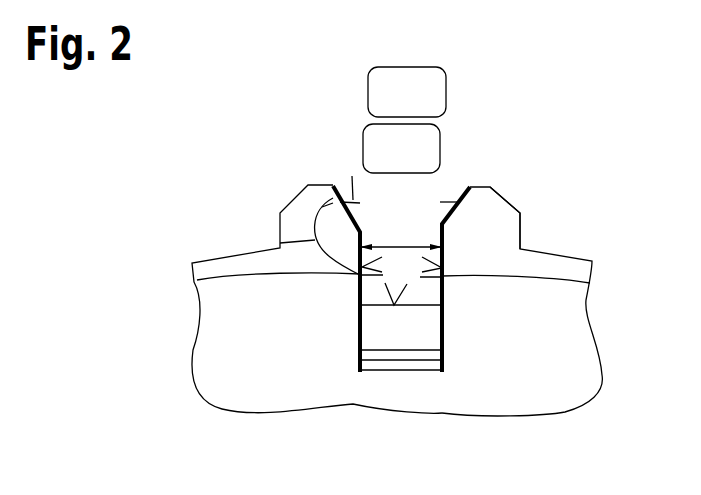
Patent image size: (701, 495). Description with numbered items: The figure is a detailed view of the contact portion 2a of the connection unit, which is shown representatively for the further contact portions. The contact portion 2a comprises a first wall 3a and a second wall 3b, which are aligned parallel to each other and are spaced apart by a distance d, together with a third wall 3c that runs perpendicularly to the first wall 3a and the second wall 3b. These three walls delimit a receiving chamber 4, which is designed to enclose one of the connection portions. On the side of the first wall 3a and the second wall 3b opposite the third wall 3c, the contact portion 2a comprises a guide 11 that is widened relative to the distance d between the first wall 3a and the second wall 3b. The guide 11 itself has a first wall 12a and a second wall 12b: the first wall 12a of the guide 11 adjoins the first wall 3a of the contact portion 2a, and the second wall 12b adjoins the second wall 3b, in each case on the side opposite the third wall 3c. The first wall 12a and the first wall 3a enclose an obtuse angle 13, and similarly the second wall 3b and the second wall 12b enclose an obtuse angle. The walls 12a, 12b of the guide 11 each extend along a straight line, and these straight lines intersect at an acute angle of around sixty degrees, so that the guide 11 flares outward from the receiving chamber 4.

The contact portion 2a is at (506, 88).
The first wall 3a is at (202, 280).
The second wall 3b is at (587, 283).
The third wall 3c is at (408, 286).
The receiving chamber 4 is at (448, 170).
The guide 11 is at (347, 158).
The first wall of the guide 12a is at (349, 202).
The second wall of the guide 12b is at (451, 200).
The obtuse angle 13 is at (280, 243).